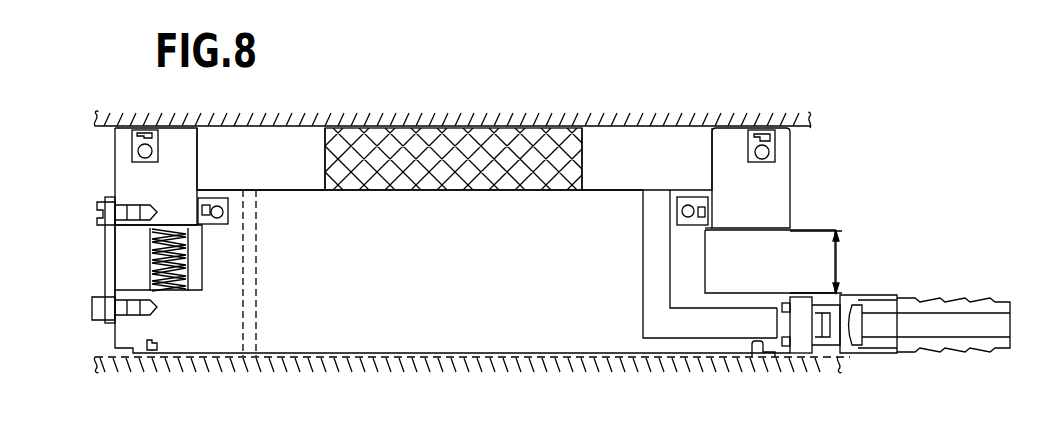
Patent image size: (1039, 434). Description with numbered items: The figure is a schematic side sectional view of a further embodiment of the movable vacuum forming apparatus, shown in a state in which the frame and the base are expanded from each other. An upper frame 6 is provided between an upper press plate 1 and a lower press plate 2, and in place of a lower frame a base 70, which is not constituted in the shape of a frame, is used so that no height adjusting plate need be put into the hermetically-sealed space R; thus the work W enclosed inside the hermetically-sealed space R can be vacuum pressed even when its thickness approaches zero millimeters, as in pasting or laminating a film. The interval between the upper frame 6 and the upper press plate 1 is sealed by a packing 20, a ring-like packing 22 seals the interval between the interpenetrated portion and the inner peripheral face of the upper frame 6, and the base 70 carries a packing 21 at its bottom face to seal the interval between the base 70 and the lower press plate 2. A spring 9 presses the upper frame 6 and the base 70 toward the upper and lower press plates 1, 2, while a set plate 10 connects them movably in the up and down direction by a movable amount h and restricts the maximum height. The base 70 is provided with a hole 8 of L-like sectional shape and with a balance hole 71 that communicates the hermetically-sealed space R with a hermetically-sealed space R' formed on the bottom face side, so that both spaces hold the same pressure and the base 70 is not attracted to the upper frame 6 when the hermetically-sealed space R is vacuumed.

The upper press plate 1 is at (498, 122).
The lower press plate 2 is at (345, 375).
The hermetically-sealed space R is at (279, 116).
The hermetically-sealed space R' is at (601, 393).
The work W is at (442, 159).
The upper frame 6 is at (762, 202).
The hole 8 is at (683, 332).
The spring 9 is at (157, 277).
The set plate 10 is at (112, 242).
The packing 20 is at (748, 131).
The packing 21 is at (760, 355).
The packing 22 is at (687, 200).
The base 70 is at (342, 300).
The balance hole 71 is at (244, 357).
The movable amount h is at (816, 262).